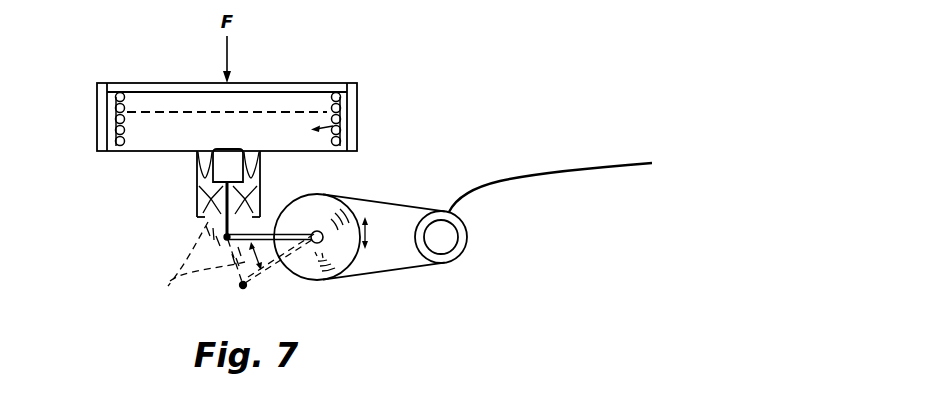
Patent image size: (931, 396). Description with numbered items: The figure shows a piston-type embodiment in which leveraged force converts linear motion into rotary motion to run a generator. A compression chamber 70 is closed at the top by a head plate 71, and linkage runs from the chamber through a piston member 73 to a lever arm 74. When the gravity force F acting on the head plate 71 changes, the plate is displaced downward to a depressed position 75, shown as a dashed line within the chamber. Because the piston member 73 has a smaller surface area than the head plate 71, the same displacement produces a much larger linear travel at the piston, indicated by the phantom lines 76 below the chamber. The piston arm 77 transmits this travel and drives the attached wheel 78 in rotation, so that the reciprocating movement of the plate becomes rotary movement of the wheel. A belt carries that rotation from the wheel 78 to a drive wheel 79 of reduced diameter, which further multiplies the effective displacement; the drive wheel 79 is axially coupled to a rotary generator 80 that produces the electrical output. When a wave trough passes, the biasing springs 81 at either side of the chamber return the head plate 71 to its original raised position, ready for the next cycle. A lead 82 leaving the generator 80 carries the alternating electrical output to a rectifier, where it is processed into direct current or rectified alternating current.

The compression chamber 70 is at (348, 117).
The head plate 71 is at (275, 91).
The piston member 73 is at (212, 158).
The lever arm 74 is at (267, 237).
The depressed position 75 is at (143, 113).
The phantom lines 76 is at (174, 275).
The piston arm 77 is at (200, 216).
The wheel 78 is at (305, 265).
The drive wheel 79 is at (450, 246).
The rotary generator 80 is at (468, 236).
The biasing springs 81 is at (112, 102).
The lead 82 is at (563, 170).